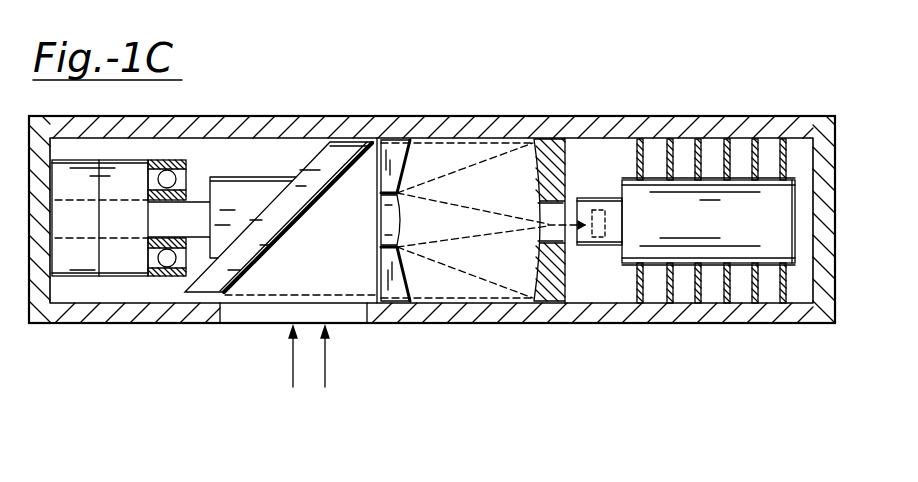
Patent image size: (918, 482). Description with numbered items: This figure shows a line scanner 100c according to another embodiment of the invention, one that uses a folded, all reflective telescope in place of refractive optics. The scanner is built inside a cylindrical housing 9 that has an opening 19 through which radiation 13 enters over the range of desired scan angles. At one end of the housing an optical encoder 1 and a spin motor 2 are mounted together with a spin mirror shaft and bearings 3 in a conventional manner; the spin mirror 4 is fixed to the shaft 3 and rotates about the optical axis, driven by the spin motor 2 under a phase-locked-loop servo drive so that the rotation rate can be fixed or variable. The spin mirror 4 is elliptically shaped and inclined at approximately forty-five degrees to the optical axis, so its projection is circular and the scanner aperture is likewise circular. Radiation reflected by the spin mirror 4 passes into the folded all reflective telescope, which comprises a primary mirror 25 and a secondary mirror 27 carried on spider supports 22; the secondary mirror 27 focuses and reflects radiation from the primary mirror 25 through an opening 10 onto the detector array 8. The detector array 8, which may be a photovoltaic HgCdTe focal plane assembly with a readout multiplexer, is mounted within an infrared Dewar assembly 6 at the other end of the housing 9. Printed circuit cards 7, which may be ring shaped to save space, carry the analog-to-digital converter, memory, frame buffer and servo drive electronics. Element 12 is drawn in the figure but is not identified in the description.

The optical encoder 1 is at (70, 278).
The spin motor 2 is at (127, 278).
The spin mirror shaft and bearings 3 is at (195, 202).
The spin mirror 4 is at (312, 140).
The infrared Dewar assembly 6 is at (620, 264).
The printed circuit cards 7 is at (718, 295).
The detector array 8 is at (590, 195).
The cylindrical housing 9 is at (478, 118).
The opening 10 is at (535, 212).
The lens 12 is at (572, 270).
The radiation 13 is at (293, 387).
The opening 19 is at (225, 310).
The spider supports 22 is at (398, 287).
The primary mirror 25 is at (545, 280).
The secondary mirror 27 is at (402, 218).
The scanner assembly 100c is at (672, 114).